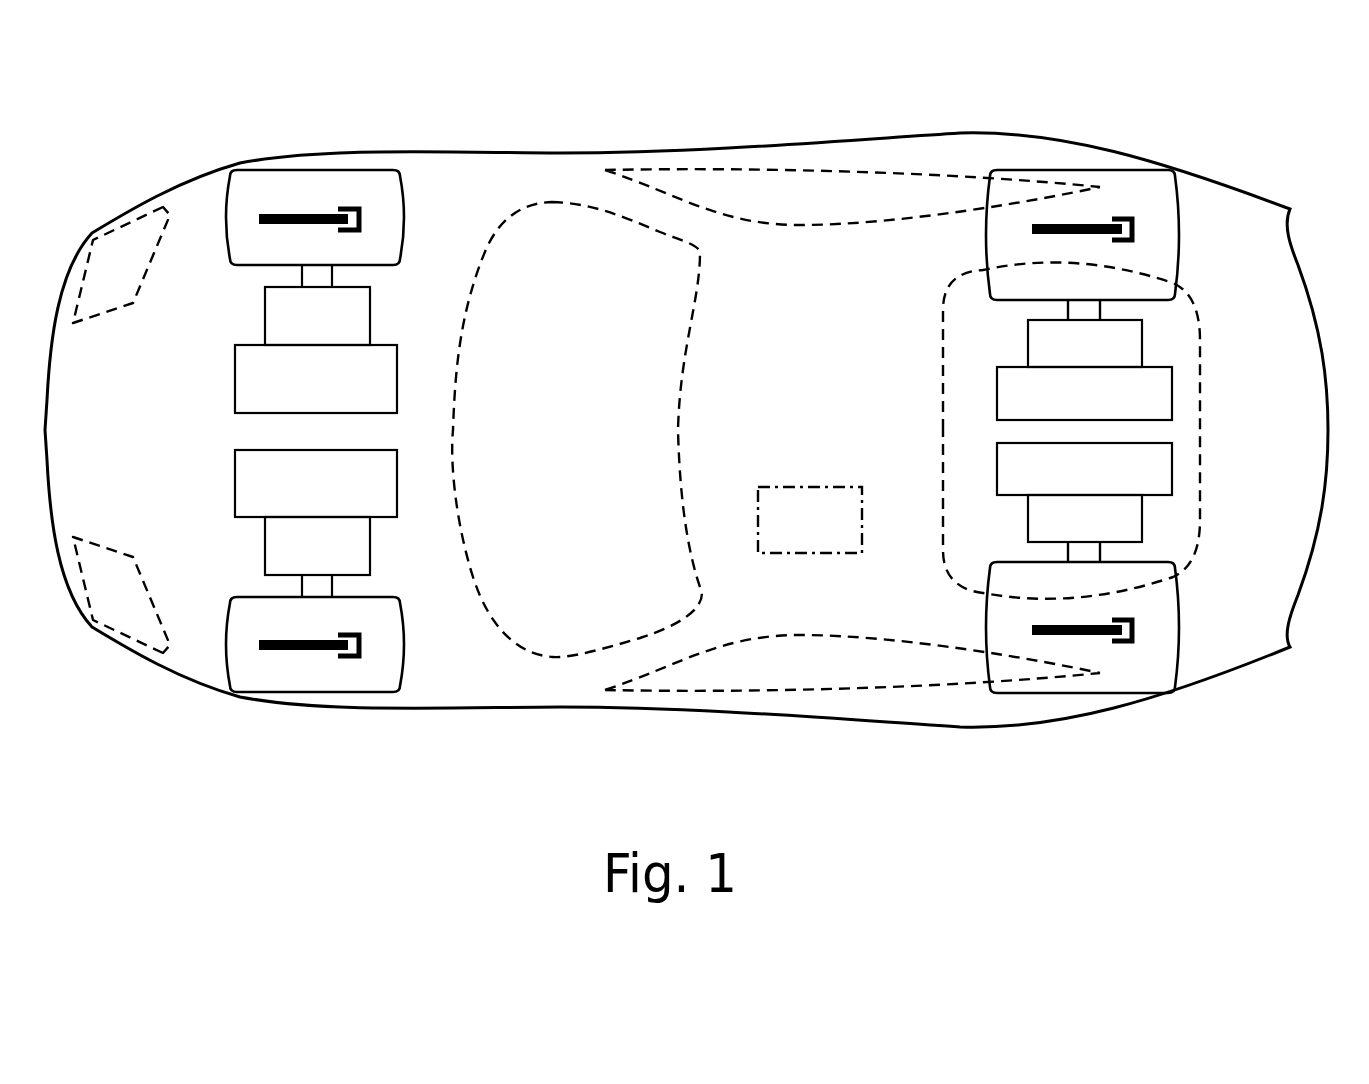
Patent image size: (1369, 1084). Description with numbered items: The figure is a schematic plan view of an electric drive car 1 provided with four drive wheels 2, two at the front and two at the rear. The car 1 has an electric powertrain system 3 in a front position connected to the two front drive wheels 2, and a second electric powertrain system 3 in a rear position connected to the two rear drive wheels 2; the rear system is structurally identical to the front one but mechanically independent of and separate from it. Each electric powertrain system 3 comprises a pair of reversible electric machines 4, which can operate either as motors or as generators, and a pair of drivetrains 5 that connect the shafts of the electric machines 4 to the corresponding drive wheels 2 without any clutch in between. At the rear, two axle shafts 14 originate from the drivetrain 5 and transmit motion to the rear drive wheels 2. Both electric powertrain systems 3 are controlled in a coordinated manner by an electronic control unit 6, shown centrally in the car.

The electric drive car 1 is at (1252, 845).
The drive wheel 2 is at (323, 183).
The electric powertrain system 3 is at (178, 412).
The reversible electric machine 4 is at (703, 418).
The drivetrain 5 is at (718, 431).
The electronic control unit 6 is at (810, 520).
The axle shaft 14 is at (1083, 310).